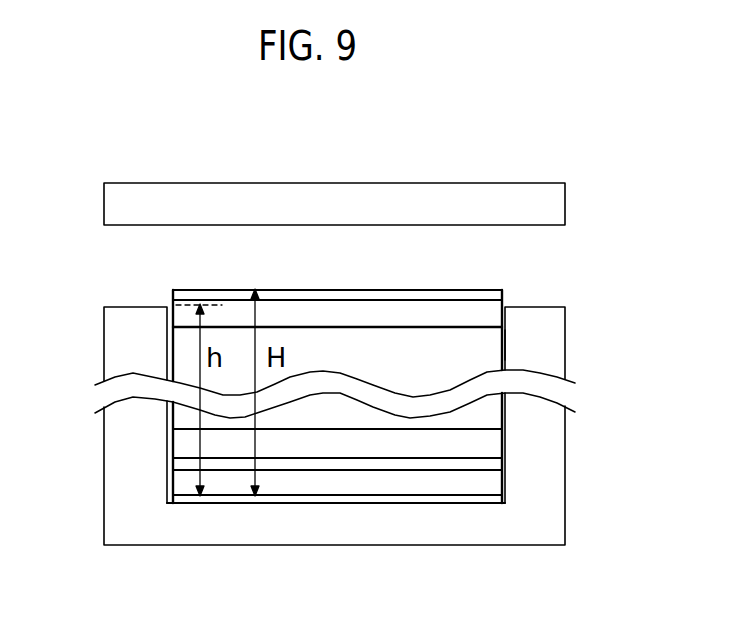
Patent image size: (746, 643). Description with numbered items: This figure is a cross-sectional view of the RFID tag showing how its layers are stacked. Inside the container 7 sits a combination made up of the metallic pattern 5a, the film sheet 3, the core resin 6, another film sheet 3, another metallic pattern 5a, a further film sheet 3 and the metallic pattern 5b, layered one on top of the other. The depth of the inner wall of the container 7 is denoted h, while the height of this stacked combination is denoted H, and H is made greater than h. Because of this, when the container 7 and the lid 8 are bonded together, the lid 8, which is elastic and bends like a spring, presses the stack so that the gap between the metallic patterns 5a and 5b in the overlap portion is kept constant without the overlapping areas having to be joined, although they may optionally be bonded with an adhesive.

The film sheet 3 is at (505, 312).
The metallic pattern 5a is at (172, 470).
The metallic pattern 5b is at (172, 295).
The core resin 6 is at (505, 345).
The container 7 is at (335, 547).
The lid 8 is at (335, 182).